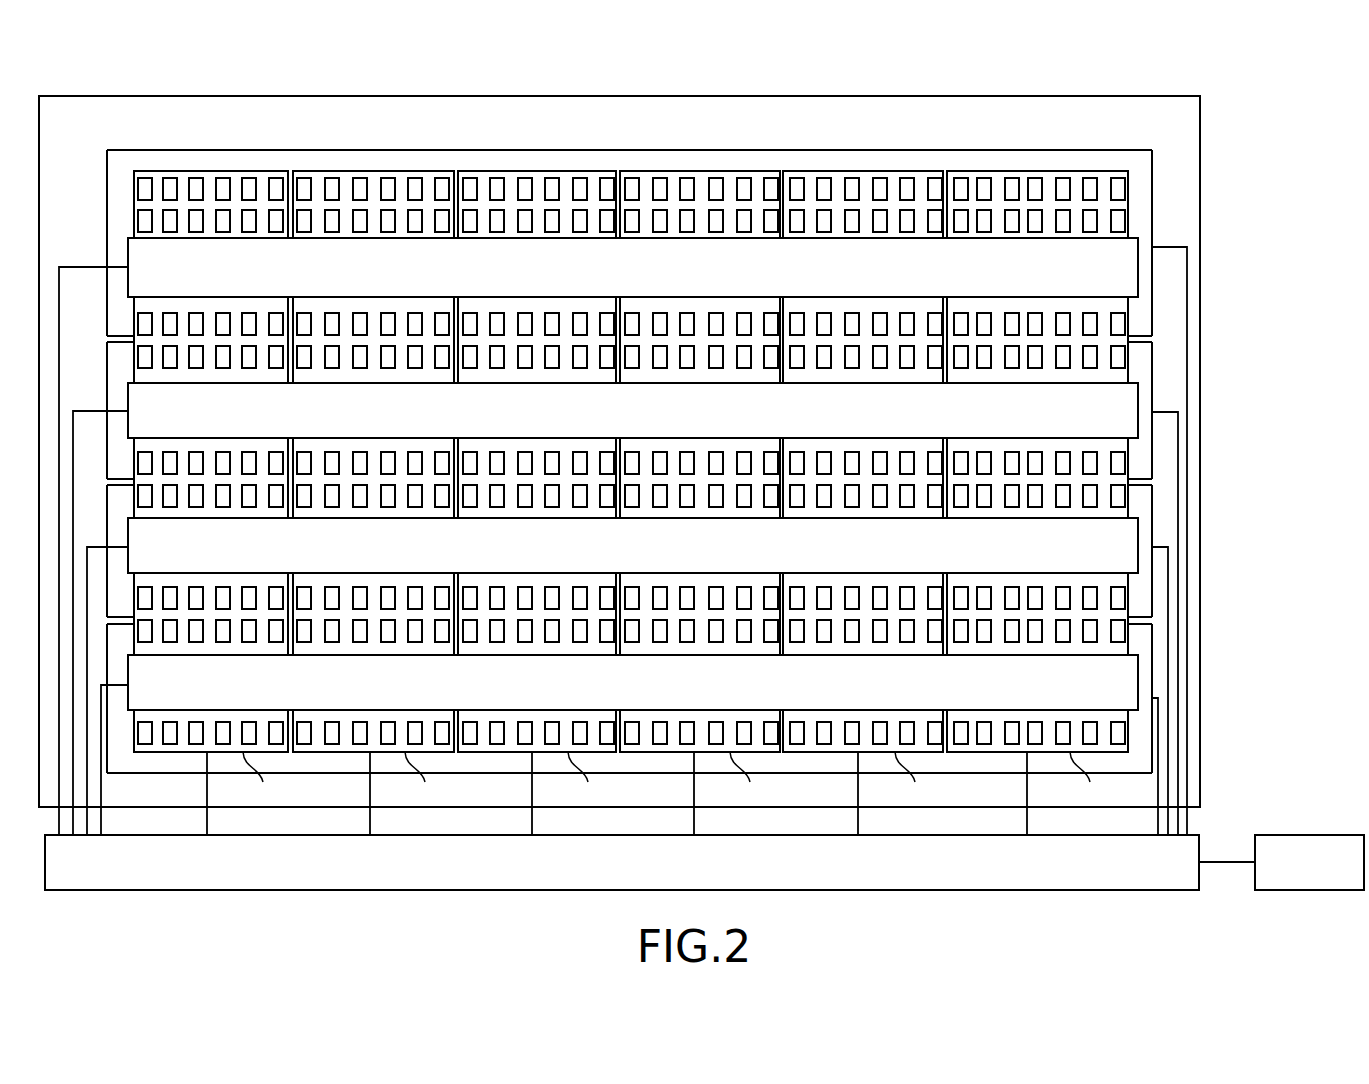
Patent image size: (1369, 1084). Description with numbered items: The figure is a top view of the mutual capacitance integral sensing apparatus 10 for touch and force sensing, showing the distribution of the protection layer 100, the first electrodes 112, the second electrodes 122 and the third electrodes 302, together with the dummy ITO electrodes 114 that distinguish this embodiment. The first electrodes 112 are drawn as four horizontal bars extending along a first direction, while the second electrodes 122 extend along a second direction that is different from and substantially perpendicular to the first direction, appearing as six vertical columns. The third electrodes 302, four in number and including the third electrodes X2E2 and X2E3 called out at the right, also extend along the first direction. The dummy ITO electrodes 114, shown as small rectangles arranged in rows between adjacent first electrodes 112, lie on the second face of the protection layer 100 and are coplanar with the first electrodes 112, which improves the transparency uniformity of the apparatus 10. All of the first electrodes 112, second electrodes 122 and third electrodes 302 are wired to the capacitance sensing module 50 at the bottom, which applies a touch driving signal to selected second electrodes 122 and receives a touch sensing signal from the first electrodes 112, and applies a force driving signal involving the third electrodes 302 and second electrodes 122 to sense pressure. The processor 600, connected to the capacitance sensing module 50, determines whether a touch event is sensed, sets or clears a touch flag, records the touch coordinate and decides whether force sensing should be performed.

The integral sensing apparatus 10 is at (704, 68).
The protection layer 100 is at (838, 102).
The third electrodes 302 is at (848, 157).
The dummy ITO electrodes 114 is at (1120, 187).
The second electrodes 122 is at (1110, 203).
The first electrodes 112 is at (1128, 267).
The capacitance sensing module 50 is at (622, 568).
The processor 600 is at (1281, 862).
The third electrode X2E2 is at (1141, 367).
The third electrode X2E3 is at (1141, 502).